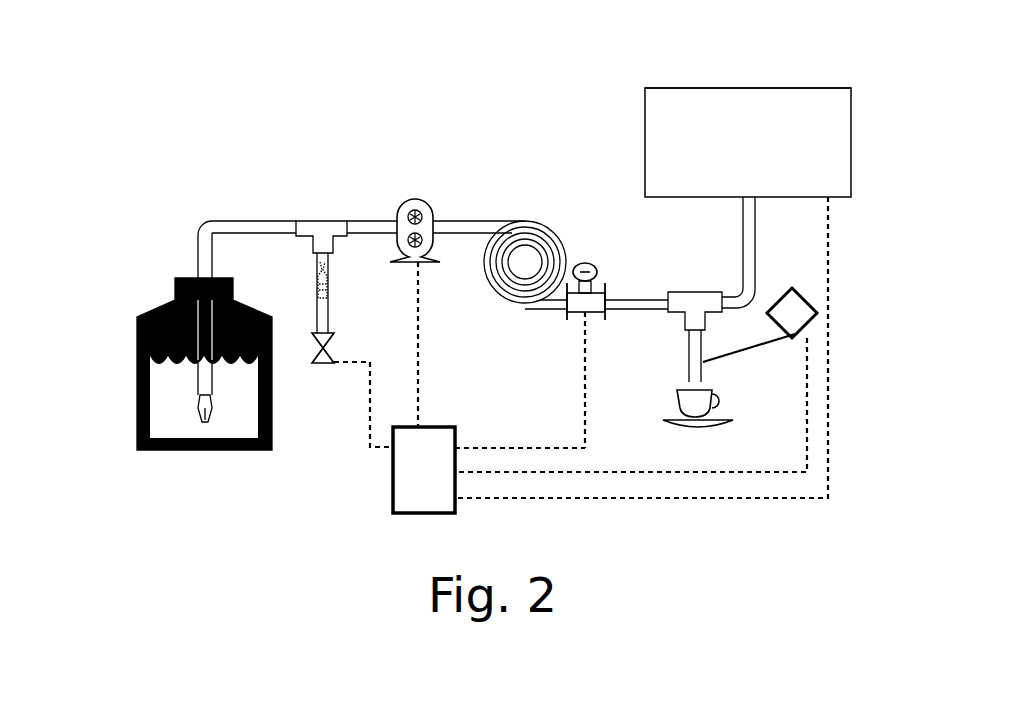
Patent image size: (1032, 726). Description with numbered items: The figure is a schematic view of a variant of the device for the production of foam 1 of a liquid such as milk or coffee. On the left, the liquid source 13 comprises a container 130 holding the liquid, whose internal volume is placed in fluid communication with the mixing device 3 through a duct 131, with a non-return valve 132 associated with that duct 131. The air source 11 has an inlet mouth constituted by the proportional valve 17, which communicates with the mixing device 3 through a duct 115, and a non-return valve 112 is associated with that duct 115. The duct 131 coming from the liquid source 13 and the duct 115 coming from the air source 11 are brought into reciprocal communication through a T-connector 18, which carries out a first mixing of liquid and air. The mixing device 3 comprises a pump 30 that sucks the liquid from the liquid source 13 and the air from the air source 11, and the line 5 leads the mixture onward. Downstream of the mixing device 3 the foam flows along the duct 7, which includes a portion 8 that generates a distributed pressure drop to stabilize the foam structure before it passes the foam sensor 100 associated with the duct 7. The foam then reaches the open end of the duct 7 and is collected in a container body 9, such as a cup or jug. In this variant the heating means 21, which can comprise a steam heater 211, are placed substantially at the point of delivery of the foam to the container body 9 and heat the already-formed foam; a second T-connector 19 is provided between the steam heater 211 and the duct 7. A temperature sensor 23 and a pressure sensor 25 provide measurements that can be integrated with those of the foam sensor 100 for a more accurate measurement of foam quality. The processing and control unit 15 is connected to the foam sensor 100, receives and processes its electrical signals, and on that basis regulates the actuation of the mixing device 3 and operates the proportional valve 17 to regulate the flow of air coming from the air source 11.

The device for the production of foam 1 is at (199, 190).
The mixing device 3 is at (399, 197).
The fluid line 5 is at (436, 240).
The duct 7 is at (619, 300).
The portion 8 is at (503, 309).
The container body 9 is at (723, 435).
The air source 11 is at (343, 411).
The liquid source 13 is at (135, 404).
The processing and control unit 15 is at (388, 465).
The proportional valve 17 is at (338, 345).
The T-connector 18 is at (330, 222).
The second T-connector 19 is at (703, 292).
The heating means 21 is at (750, 87).
The temperature sensor 23 is at (691, 346).
The pressure sensor 25 is at (803, 294).
The pump 30 is at (421, 201).
The foam sensor 100 is at (587, 259).
The non-return valve 112 is at (318, 272).
The duct 115 is at (317, 310).
The container 130 is at (160, 450).
The duct 131 is at (203, 239).
The non-return valve 132 is at (210, 423).
The steam heater 211 is at (702, 89).